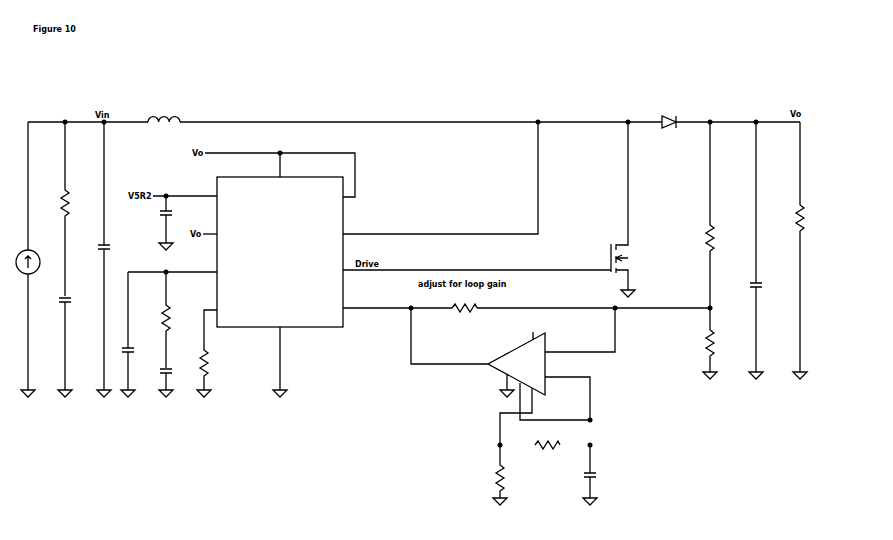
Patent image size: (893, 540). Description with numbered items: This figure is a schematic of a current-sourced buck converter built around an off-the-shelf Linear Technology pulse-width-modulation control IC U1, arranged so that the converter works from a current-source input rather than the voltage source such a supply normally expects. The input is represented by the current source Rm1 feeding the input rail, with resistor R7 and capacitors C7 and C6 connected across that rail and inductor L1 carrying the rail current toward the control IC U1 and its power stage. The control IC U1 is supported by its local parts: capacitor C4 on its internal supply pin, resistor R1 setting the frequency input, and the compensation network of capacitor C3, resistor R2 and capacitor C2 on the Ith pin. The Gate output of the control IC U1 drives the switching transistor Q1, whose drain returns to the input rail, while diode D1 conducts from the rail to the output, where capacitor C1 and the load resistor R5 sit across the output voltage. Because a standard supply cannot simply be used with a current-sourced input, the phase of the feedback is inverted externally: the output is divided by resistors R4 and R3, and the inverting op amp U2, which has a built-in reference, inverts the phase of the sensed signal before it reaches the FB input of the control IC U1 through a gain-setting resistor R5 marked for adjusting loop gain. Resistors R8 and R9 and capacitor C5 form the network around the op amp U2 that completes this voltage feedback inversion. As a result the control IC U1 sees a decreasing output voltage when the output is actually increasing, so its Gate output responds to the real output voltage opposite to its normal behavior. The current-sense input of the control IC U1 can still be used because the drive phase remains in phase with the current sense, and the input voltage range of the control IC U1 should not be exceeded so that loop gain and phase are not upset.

The current source 2 amps Rm1 is at (40, 259).
The resistor R7 is at (74, 209).
The capacitor 6.8u C7 is at (73, 342).
The capacitor .68u C6 is at (112, 259).
The inductor 6.8m L1 is at (164, 121).
The control IC U1 is at (290, 282).
The capacitor 4.7u C4 is at (174, 223).
The capacitor 47p C3 is at (135, 334).
The resistor 22k R2 is at (176, 320).
The capacitor 6.8n C2 is at (174, 378).
The resistor 80.6K R1 is at (217, 353).
The MOSFET FDS5680 Q1 is at (642, 209).
The diode MBRB2545CT D1 is at (673, 122).
The resistor 100k R4 is at (723, 215).
The resistor 14k R3 is at (718, 343).
The capacitor 220u C1 is at (766, 250).
The resistor R5 is at (635, 250).
The inverting op amp U2 is at (492, 376).
The resistor 51.8k R8 is at (549, 445).
The resistor 10k R9 is at (508, 475).
The capacitor C5 is at (601, 475).